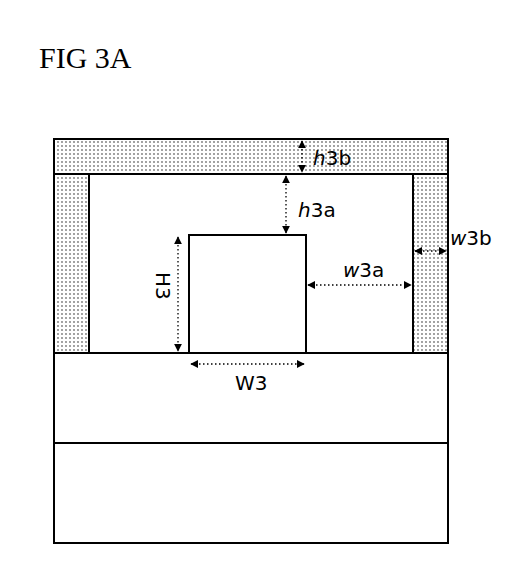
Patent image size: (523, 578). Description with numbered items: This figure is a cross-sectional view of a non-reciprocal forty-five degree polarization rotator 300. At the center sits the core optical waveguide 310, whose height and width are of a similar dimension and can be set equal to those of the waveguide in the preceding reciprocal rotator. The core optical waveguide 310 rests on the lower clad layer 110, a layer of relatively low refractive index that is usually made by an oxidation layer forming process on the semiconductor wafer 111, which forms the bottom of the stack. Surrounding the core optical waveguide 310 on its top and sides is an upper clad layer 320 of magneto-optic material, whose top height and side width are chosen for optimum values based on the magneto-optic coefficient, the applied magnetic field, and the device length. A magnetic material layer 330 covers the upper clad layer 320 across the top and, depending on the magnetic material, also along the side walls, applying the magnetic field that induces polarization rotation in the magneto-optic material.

The non-reciprocal 45° polarization rotator 300 is at (251, 232).
The magnetic material layer 330 is at (251, 156).
The upper clad layer 320 is at (251, 263).
The optical waveguide 310 is at (247, 279).
The lower clad layer 110 is at (251, 398).
The semiconductor wafer 111 is at (251, 493).